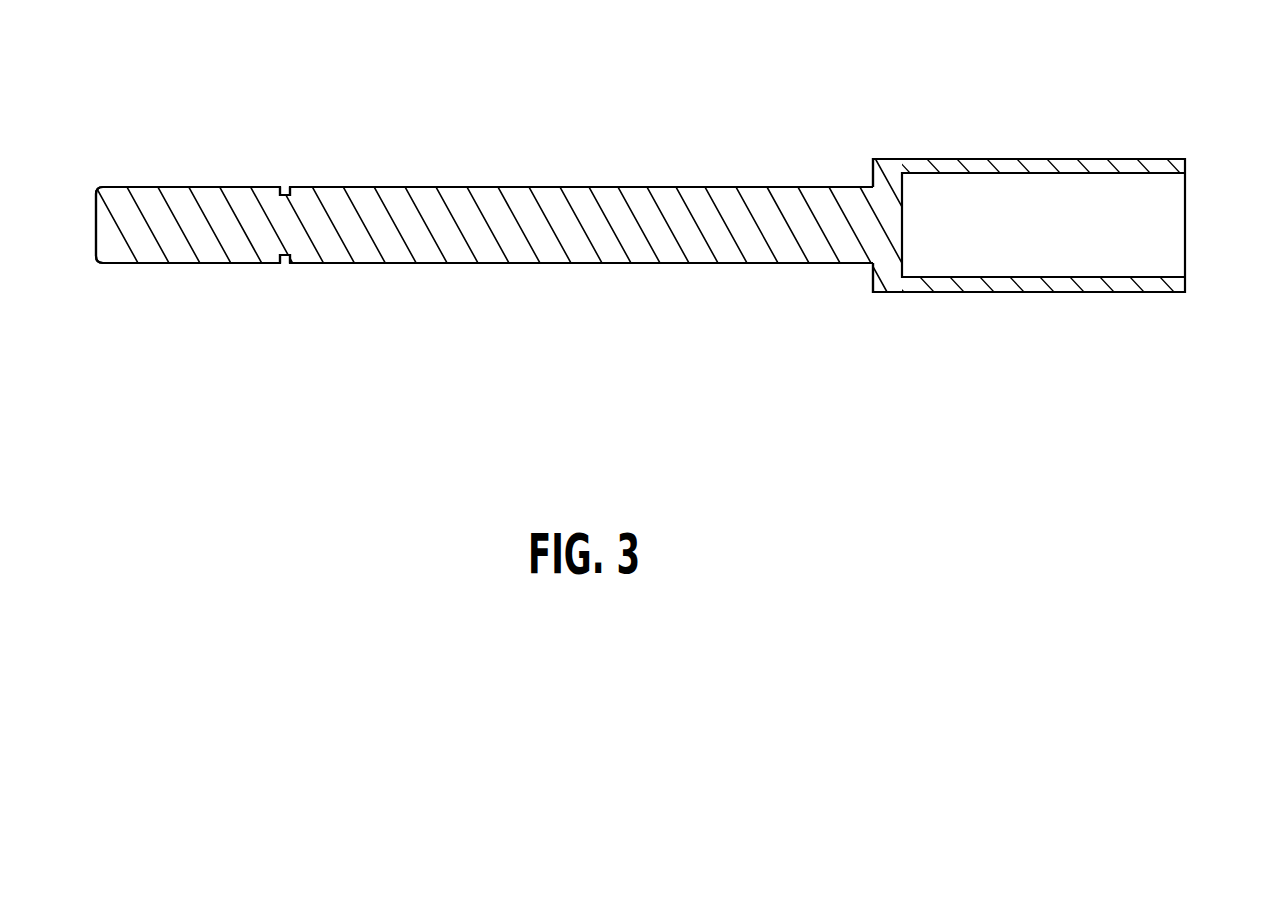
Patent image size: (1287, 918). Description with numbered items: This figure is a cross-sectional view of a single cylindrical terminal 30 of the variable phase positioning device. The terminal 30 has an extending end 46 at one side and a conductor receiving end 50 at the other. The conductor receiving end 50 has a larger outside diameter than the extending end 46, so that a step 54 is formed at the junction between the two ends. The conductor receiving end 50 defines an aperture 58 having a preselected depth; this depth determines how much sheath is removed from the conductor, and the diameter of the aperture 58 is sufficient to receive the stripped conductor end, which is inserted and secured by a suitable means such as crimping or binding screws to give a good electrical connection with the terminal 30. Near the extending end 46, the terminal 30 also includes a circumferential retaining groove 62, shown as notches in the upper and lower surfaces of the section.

The terminal 30 is at (553, 187).
The extending end 46 is at (183, 190).
The conductor receiving end 50 is at (1043, 148).
The step 54 is at (873, 180).
The aperture 58 is at (1152, 212).
The circumferential retaining groove 62 is at (283, 266).